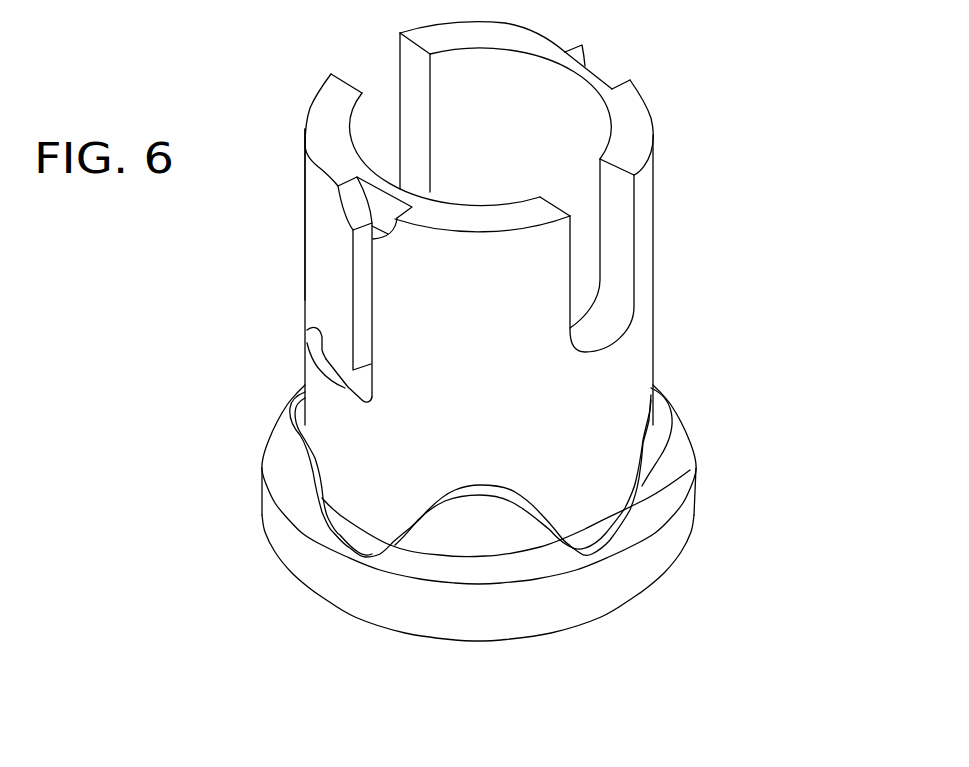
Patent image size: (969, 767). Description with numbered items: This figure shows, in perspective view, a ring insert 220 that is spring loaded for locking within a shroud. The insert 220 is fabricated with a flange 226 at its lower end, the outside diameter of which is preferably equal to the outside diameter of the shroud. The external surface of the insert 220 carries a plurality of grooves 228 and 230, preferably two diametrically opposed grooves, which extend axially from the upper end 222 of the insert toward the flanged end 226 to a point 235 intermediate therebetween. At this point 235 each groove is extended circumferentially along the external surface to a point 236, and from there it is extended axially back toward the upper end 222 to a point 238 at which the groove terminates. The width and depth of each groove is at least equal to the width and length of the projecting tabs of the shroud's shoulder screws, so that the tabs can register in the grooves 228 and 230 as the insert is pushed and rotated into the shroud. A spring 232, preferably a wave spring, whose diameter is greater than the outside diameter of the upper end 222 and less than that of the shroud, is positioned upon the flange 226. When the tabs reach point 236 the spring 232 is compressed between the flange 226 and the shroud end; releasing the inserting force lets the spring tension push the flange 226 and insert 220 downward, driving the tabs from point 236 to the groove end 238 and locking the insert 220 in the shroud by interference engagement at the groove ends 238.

The ring insert 220 is at (702, 184).
The upper end 222 is at (327, 122).
The flange 226 is at (692, 505).
The groove 228 is at (360, 305).
The groove 230 is at (590, 66).
The spring 232 is at (615, 535).
The point 235 is at (355, 387).
The point 236 is at (307, 345).
The groove end 238 is at (307, 332).